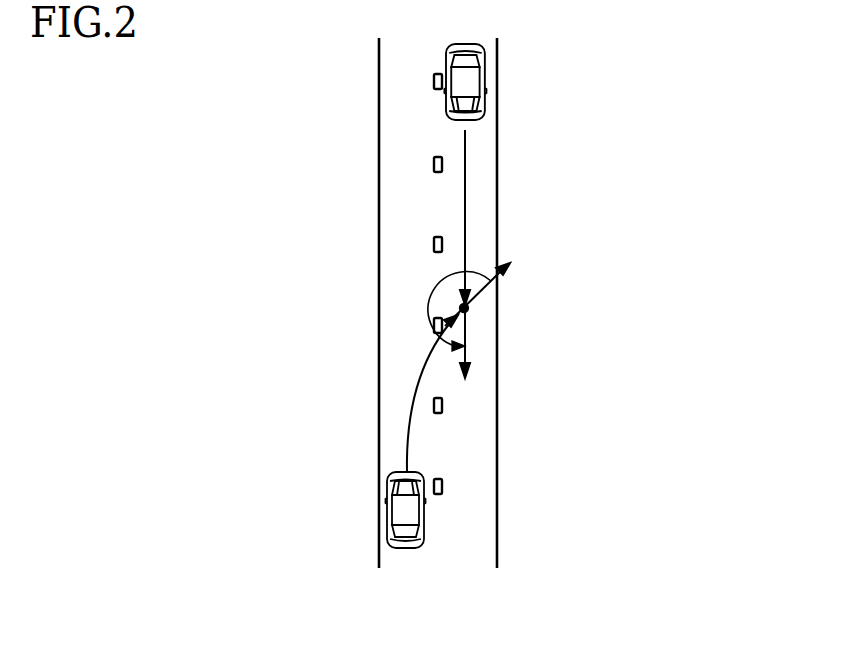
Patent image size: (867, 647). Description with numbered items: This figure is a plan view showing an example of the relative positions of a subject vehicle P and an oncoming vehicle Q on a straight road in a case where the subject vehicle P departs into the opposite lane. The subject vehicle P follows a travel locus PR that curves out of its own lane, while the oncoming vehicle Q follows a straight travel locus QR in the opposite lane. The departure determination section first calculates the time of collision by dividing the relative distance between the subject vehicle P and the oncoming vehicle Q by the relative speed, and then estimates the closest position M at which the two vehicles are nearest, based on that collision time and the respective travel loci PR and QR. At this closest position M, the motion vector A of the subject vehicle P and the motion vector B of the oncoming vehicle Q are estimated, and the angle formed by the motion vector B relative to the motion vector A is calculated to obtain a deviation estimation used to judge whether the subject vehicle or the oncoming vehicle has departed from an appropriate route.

The oncoming vehicle Q is at (466, 82).
The travel locus of the oncoming vehicle QR is at (466, 218).
The motion vector of the subject vehicle A is at (488, 288).
The closest position M is at (468, 310).
The motion vector of the oncoming vehicle B is at (466, 340).
The travel locus of the subject vehicle PR is at (415, 383).
The subject vehicle P is at (402, 513).